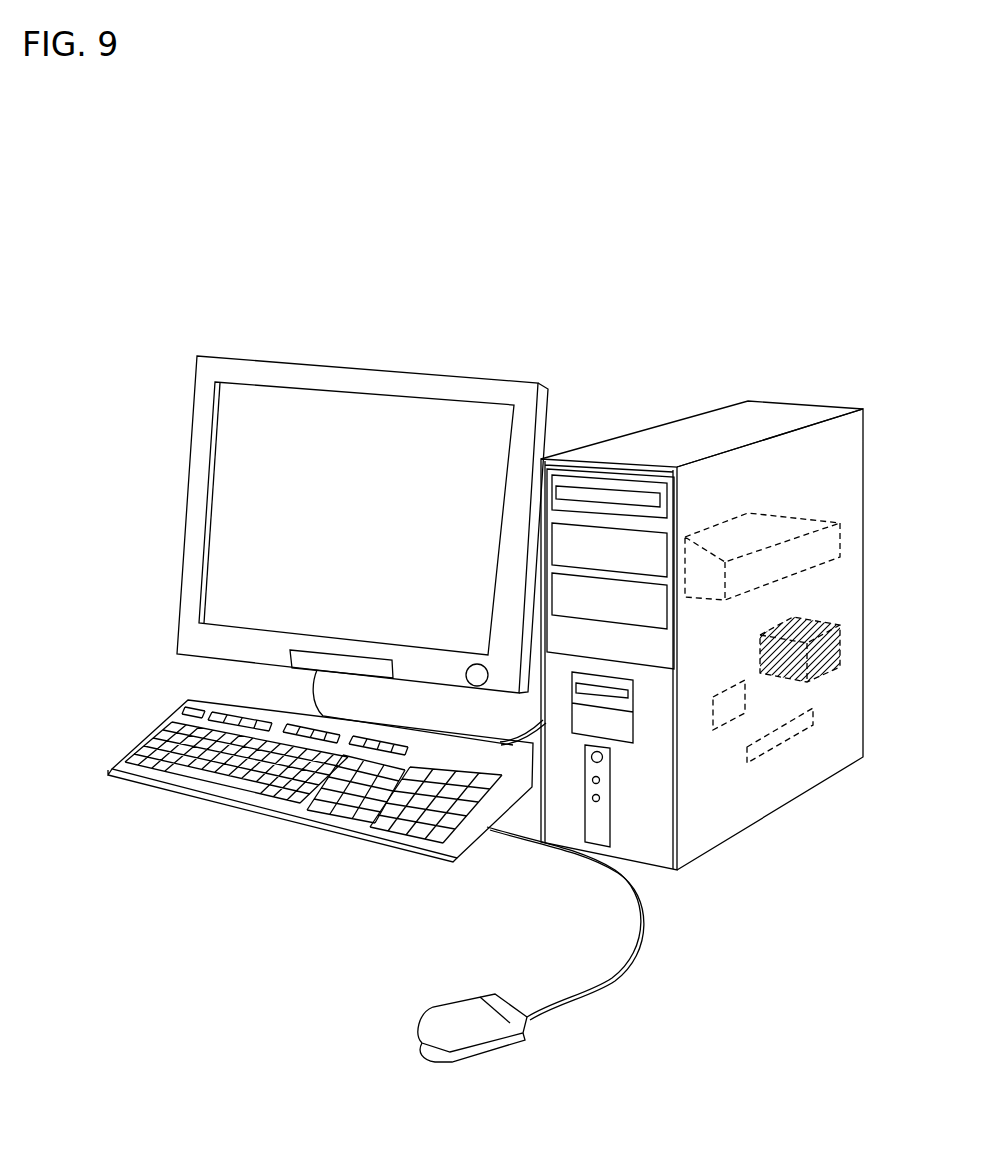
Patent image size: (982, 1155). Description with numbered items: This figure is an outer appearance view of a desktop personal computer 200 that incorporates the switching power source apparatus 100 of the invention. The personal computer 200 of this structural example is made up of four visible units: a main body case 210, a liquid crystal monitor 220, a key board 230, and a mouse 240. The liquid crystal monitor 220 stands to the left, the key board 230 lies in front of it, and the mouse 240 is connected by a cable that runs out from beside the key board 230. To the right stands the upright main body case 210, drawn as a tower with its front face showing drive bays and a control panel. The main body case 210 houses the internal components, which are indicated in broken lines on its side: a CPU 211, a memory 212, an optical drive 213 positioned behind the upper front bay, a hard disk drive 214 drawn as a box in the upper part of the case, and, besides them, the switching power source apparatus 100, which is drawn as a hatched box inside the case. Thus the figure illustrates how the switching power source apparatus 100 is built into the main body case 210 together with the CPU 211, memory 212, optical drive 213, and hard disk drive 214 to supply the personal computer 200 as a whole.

The personal computer 200 is at (123, 310).
The main body case 210 is at (695, 423).
The CPU 211 is at (732, 693).
The memory 212 is at (782, 737).
The optical drive 213 is at (657, 503).
The hard disk drive 214 is at (765, 523).
The switching power source apparatus 100 is at (820, 627).
The liquid crystal monitor 220 is at (373, 378).
The key board 230 is at (255, 807).
The mouse 240 is at (460, 1013).